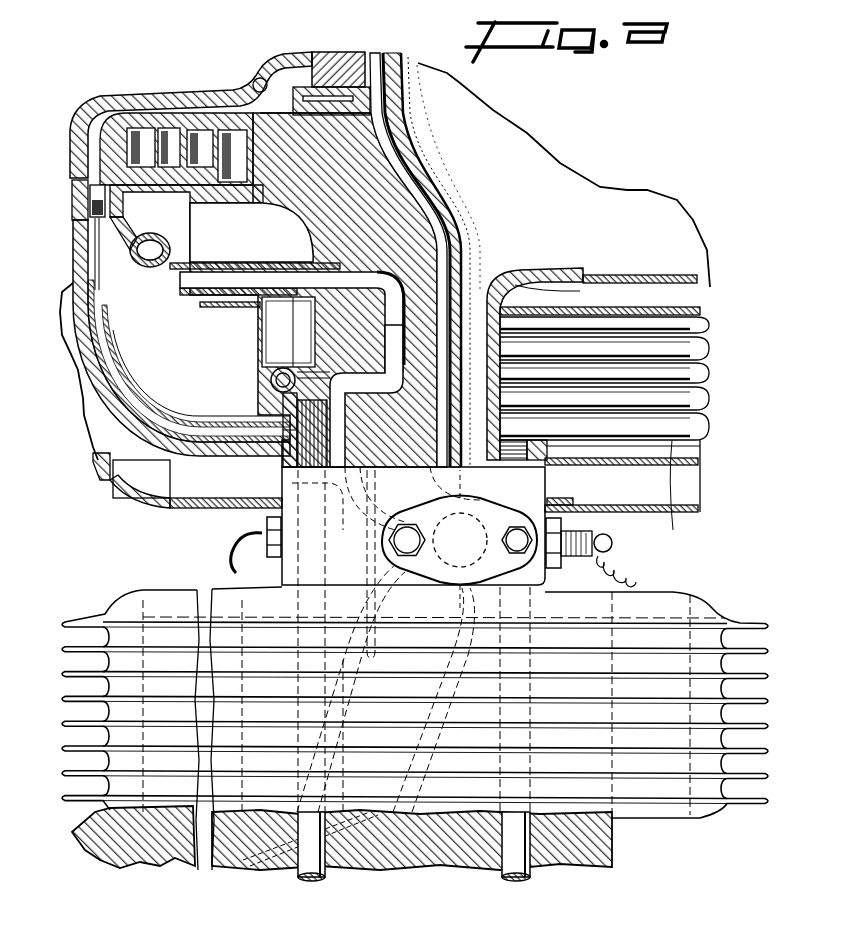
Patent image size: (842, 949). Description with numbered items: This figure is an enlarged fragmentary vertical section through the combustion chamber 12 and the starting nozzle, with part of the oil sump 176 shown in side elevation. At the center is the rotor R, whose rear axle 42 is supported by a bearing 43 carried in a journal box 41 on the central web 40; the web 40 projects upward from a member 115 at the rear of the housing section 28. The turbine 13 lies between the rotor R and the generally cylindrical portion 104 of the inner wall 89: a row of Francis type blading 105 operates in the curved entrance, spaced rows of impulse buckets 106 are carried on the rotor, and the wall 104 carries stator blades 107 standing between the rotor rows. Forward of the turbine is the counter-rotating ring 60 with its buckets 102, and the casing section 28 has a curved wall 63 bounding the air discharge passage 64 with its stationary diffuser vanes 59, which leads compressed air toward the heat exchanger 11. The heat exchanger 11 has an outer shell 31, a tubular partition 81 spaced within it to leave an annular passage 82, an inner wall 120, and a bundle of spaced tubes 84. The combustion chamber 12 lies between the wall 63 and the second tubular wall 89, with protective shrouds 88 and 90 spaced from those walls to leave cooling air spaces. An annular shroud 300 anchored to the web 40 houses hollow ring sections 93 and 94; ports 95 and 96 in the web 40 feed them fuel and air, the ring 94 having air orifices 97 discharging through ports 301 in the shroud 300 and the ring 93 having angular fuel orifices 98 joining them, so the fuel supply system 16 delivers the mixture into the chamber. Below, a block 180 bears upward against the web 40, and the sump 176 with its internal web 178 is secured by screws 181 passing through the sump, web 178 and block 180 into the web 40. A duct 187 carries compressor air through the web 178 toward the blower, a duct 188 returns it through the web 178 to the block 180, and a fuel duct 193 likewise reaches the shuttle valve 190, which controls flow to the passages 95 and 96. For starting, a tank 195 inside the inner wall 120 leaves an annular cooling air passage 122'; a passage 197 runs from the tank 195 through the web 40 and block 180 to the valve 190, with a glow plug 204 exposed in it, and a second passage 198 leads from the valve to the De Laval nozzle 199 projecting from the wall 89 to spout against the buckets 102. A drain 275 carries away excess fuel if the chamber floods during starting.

The Francis type blading 105 is at (107, 150).
The central rotor R is at (148, 92).
The turbine means 13 is at (178, 128).
The stator blades 107 is at (208, 140).
The impulse type buckets 106 is at (235, 135).
The axle 42 is at (316, 52).
The bearing 43 is at (372, 68).
The journal box 41 is at (353, 104).
The counter-rotating ring 60 is at (72, 205).
The generally cylindrical portion of the wall 104 is at (197, 204).
The buckets 102 is at (113, 245).
The nozzle 199 is at (163, 268).
The second tubular wall 89 is at (187, 272).
The protective shroud 90 is at (208, 290).
The combustion chamber 12 is at (212, 364).
The second passage 198 is at (358, 278).
The single passage 197 is at (492, 272).
The tank 195 is at (650, 275).
The annular cooling air passage 122' is at (586, 175).
The turbine discharge member 115 is at (580, 291).
The inner wall of the heat exchanger 120 is at (680, 312).
The spaced tubes 84 is at (700, 382).
The protective shroud 88 is at (120, 394).
The curved wall 63 is at (137, 420).
The stationary diffuser vanes 59 is at (120, 450).
The housing section 28 is at (93, 458).
The air discharge passage 64 is at (160, 472).
The block 180 is at (287, 510).
The drain 275 is at (232, 555).
The oil sump 176 is at (125, 602).
The shuttle valve 190 is at (445, 556).
The glow plug 204 is at (568, 546).
The tubular partition 81 is at (610, 466).
The annular passage 82 is at (645, 505).
The heat exchanger 11 is at (682, 495).
The shell 31 is at (700, 513).
The central web 40 is at (313, 290).
The hollow ring section 93 is at (338, 372).
The port 95 is at (375, 392).
The hollow ring section 94 is at (268, 372).
The ports 301 is at (288, 332).
The air orifices 97 is at (288, 332).
The substantially annular shroud 300 is at (271, 383).
The fuel supply system 16 is at (261, 398).
The angular fuel orifices 98 is at (285, 393).
The port 96 is at (288, 430).
The internal web 178 is at (612, 853).
The duct 187 is at (267, 860).
The screws 181 is at (322, 870).
The duct 193 is at (355, 850).
The duct 188 is at (395, 850).